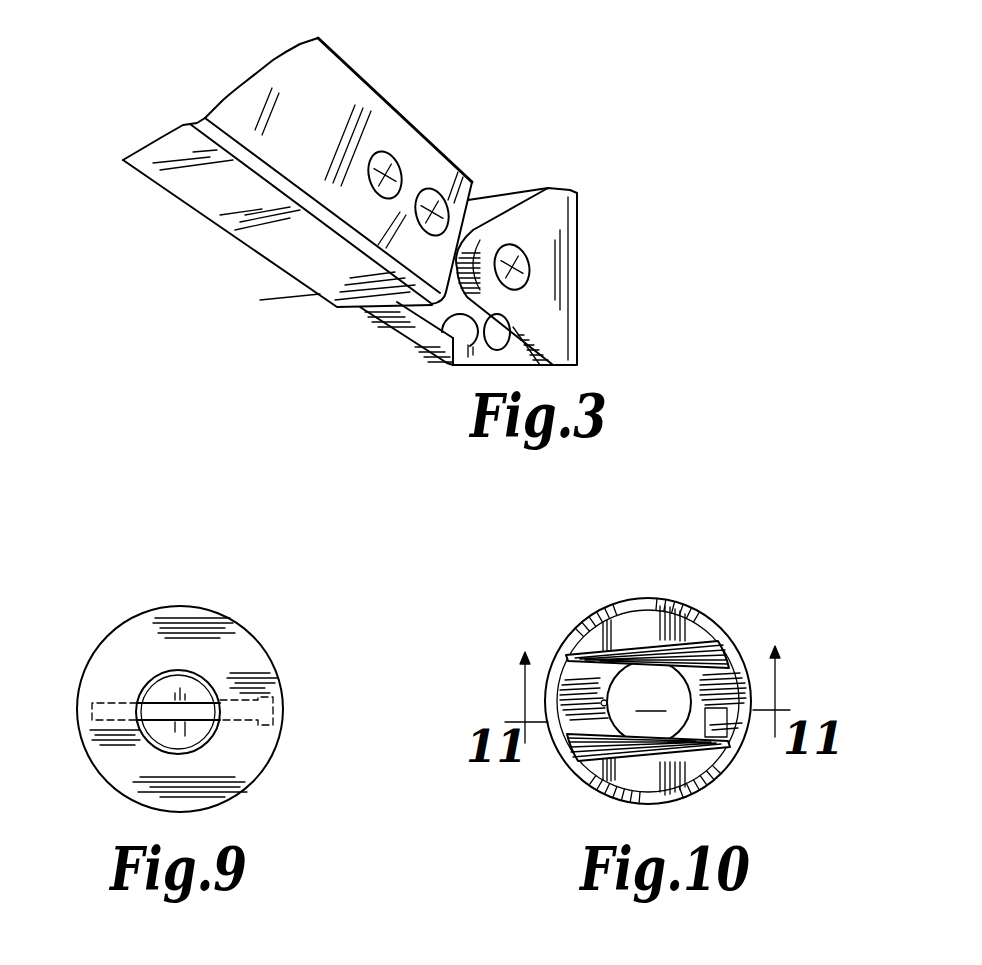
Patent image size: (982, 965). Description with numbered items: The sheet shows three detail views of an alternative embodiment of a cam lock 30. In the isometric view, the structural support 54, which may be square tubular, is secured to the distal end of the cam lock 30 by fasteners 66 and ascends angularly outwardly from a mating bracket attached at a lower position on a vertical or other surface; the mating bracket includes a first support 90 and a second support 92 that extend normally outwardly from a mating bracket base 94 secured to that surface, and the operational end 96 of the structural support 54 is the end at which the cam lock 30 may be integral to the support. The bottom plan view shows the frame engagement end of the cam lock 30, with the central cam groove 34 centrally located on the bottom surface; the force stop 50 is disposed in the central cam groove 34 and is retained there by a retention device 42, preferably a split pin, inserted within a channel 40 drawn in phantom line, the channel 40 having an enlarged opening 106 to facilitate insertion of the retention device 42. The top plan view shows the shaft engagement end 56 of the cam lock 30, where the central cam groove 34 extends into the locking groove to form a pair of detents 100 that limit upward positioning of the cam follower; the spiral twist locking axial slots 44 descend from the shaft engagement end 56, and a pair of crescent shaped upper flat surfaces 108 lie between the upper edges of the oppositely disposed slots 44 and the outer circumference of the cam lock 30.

In FIG. 3, the cam lock 30 is at (453, 315).
In FIG. 9, the cam lock 30 is at (207, 647).
In FIG. 9, the central cam groove 34 is at (143, 740).
In FIG. 10, the central cam groove 34 is at (649, 702).
In FIG. 9, the channel 40 is at (240, 722).
In FIG. 9, the retention device 42 is at (170, 693).
In FIG. 10, the spiral twist locking axial slot 44 is at (703, 653).
In FIG. 9, the force stop 50 is at (197, 687).
In FIG. 3, the structural support 54 is at (285, 248).
In FIG. 10, the shaft engagement end 56 is at (722, 602).
In FIG. 3, the fasteners 66 is at (435, 190).
In FIG. 3, the first support 90 is at (508, 330).
In FIG. 3, the second support 92 is at (400, 328).
In FIG. 3, the mating bracket base 94 is at (492, 210).
In FIG. 3, the operational end 96 is at (314, 311).
In FIG. 10, the detents 100 is at (603, 703).
In FIG. 9, the enlarged opening 106 is at (287, 685).
In FIG. 10, the crescent shaped upper flat surfaces 108 is at (647, 630).